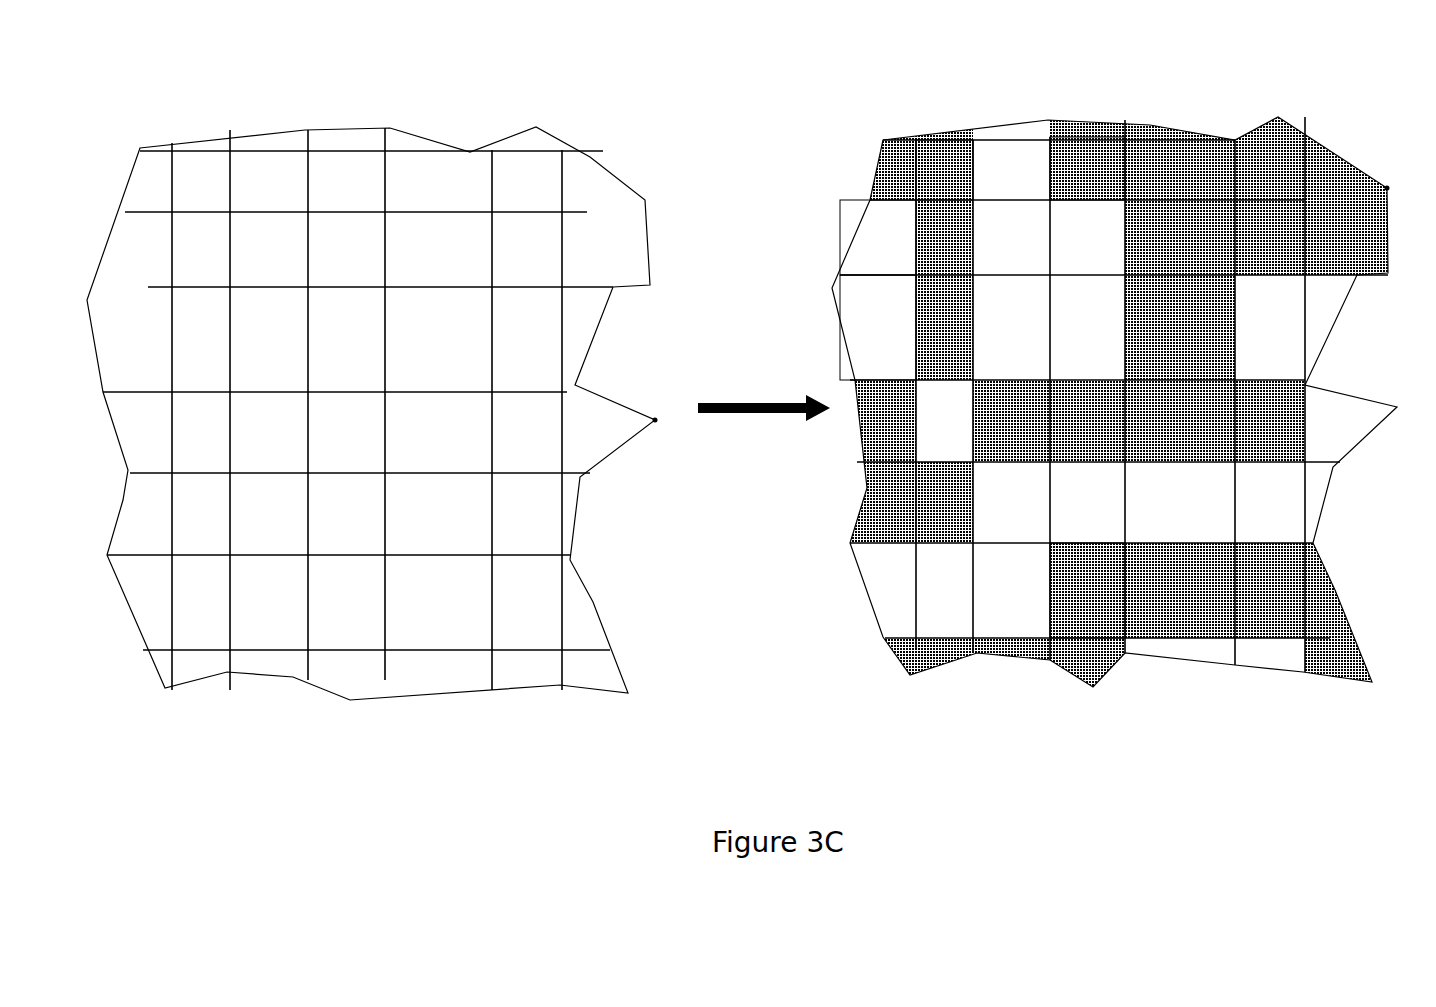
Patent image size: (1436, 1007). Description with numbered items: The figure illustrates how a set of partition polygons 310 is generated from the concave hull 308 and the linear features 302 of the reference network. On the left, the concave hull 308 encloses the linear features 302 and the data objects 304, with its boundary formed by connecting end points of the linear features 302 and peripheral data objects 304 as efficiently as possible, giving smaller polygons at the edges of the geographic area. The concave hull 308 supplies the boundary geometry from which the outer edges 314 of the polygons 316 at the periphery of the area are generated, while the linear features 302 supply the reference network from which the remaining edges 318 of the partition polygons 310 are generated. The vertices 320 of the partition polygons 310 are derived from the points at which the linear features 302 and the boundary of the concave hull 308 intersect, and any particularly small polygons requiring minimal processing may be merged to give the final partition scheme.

The linear features 302 is at (562, 630).
The data objects 304 is at (655, 420).
The concave hull 308 is at (568, 142).
The partition polygons 310 is at (1208, 112).
The outer edges 314 is at (843, 257).
The polygons at the periphery 316 is at (851, 292).
The remaining edges 318 is at (1128, 593).
The vertices 320 is at (1048, 137).